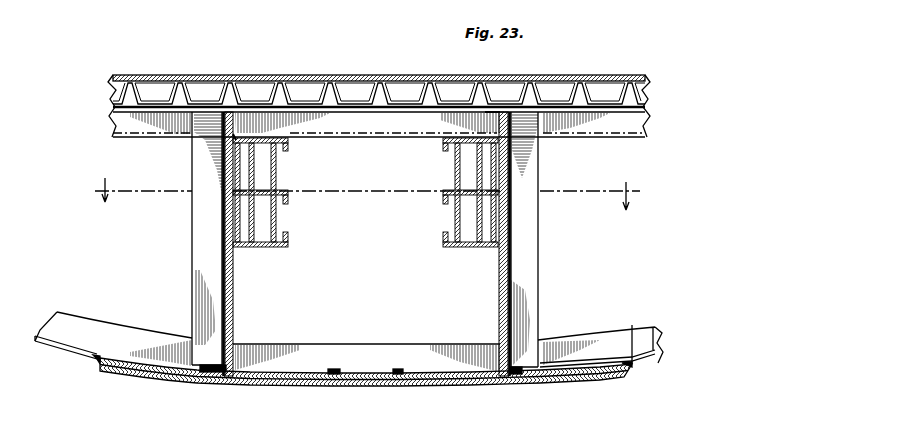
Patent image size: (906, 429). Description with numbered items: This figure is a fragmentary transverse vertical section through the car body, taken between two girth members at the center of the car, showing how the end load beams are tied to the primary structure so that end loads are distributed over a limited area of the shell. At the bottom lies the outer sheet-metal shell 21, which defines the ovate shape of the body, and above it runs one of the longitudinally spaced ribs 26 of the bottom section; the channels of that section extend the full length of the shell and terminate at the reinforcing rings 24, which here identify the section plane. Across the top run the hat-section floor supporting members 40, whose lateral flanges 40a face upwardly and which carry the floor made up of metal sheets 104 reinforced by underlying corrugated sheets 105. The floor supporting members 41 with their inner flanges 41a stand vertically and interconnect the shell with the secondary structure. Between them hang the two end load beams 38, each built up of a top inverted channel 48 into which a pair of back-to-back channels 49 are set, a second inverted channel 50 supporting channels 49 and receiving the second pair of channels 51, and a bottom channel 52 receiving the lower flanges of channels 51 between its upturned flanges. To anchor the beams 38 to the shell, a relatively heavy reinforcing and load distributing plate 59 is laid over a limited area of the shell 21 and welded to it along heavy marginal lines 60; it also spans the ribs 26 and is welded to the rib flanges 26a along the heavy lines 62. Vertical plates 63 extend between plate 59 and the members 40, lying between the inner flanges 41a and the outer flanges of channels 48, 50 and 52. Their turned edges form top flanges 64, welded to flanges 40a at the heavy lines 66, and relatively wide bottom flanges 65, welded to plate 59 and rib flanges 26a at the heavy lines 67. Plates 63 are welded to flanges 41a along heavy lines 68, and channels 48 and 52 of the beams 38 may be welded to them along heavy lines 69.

The outer sheet-metal shell 21 is at (70, 352).
The reinforcing rings 24 is at (372, 202).
The ribs 26 is at (149, 338).
The rib flanges 26a is at (651, 329).
The end load beams 38 is at (365, 217).
The floor supporting members 40 is at (362, 118).
The lateral flanges 40a is at (310, 110).
The floor supporting members 41 is at (198, 265).
The inner flanges 41a is at (224, 316).
The top inverted channel 48 is at (288, 150).
The channels 49 is at (252, 177).
The second inverted channel 50 is at (288, 207).
The second pair of channels 51 is at (254, 230).
The channel 52 is at (263, 248).
The reinforcing and load distributing plate 59 is at (149, 375).
The heavy marginal lines 60 is at (95, 356).
The heavy lines 62 is at (183, 376).
The plates 63 is at (233, 287).
The top flanges 64 is at (237, 137).
The bottom flanges 65 is at (286, 383).
The heavy lines 66 is at (491, 113).
The heavy lines 67 is at (395, 370).
The heavy lines 68 is at (226, 171).
The heavy lines 69 is at (241, 130).
The metal sheets 104 is at (180, 63).
The corrugated sheets 105 is at (204, 95).